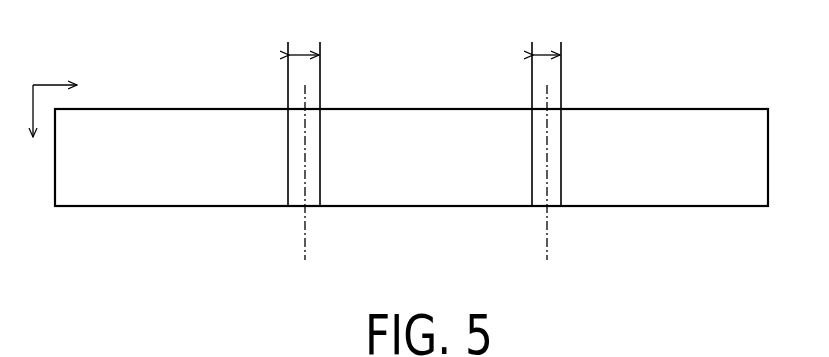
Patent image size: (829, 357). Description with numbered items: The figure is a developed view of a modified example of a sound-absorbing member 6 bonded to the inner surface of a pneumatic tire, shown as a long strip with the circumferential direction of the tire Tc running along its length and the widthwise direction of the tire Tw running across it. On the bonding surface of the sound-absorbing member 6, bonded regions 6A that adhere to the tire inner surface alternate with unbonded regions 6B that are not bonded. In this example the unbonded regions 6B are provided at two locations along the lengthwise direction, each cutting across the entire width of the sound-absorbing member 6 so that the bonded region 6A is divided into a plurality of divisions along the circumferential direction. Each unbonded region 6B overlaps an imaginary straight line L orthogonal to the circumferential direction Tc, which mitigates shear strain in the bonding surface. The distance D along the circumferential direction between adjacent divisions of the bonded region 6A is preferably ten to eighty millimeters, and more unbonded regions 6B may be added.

The sound-absorbing member 6 is at (714, 104).
The bonded regions 6A is at (207, 133).
The unbonded regions 6B is at (317, 132).
The imaginary straight line L is at (305, 208).
The distance D is at (424, 42).
The circumferential direction of the tire Tc is at (68, 85).
The widthwise direction of the tire Tw is at (29, 126).